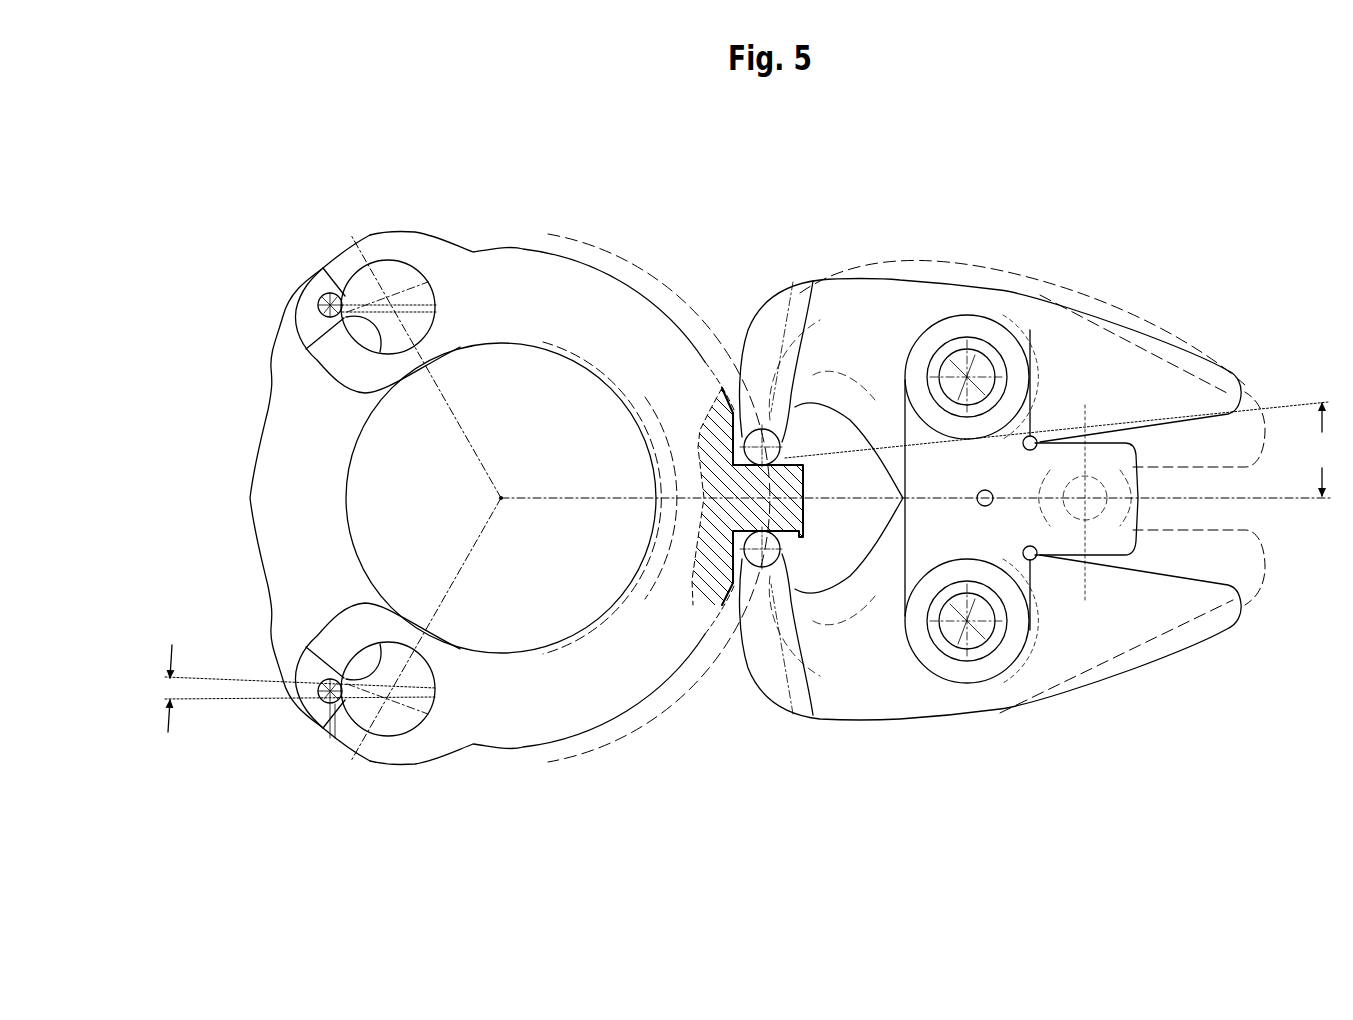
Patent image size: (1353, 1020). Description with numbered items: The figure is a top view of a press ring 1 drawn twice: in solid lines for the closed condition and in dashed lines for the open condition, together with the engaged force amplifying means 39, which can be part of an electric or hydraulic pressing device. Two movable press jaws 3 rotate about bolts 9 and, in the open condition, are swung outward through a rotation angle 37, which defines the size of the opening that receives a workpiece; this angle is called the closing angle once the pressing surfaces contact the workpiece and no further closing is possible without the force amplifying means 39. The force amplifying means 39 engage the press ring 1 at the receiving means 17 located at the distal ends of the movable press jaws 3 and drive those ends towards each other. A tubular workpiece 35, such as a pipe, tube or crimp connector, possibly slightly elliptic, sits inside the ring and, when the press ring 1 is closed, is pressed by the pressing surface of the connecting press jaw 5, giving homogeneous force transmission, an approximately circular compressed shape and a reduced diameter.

The press ring 1 is at (220, 191).
The movable press jaws 3 is at (653, 336).
The connecting press jaw 5 is at (285, 492).
The bolts 9 is at (397, 287).
The receiving means 17 is at (783, 480).
The tubular workpiece 35 is at (499, 333).
The rotation angle 37 is at (108, 711).
The force amplifying means 39 is at (1160, 300).